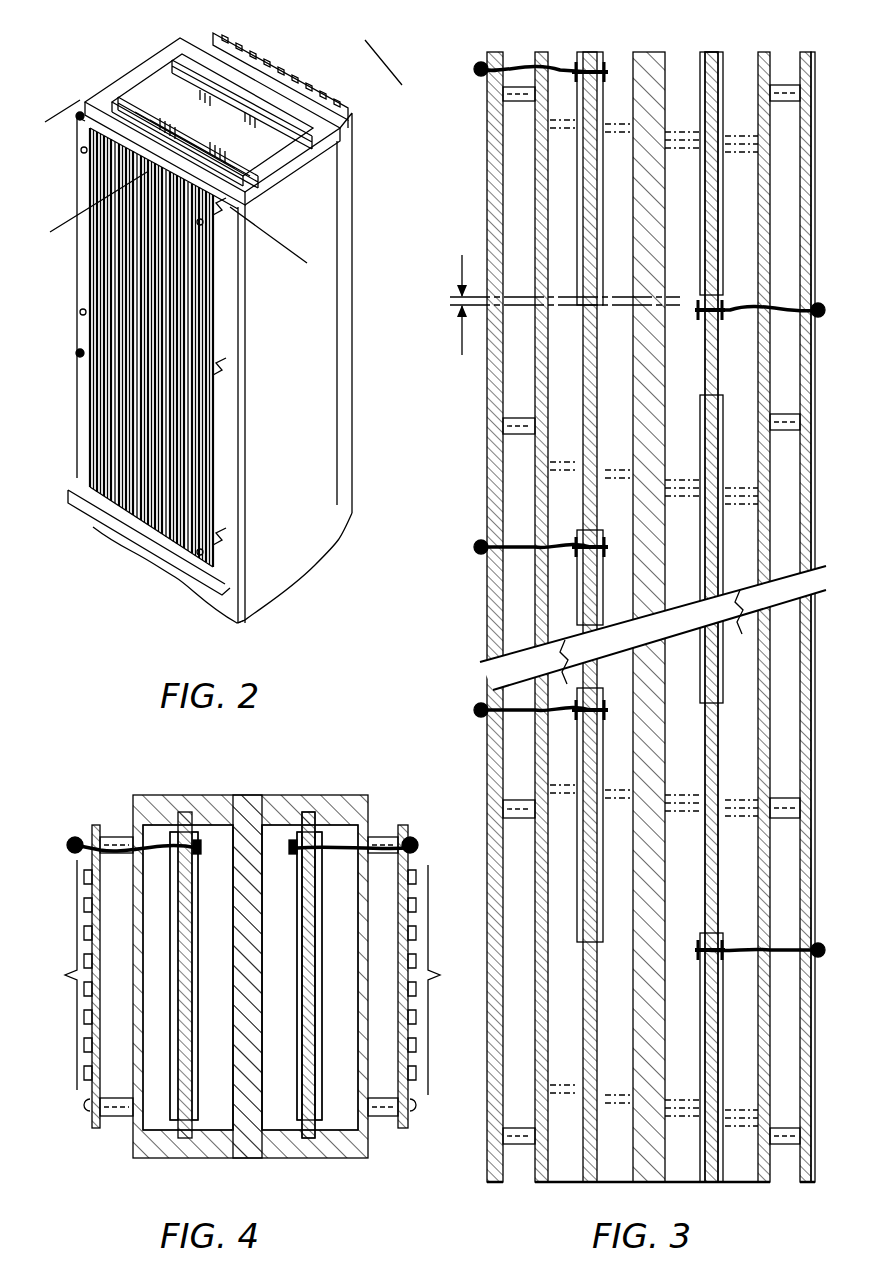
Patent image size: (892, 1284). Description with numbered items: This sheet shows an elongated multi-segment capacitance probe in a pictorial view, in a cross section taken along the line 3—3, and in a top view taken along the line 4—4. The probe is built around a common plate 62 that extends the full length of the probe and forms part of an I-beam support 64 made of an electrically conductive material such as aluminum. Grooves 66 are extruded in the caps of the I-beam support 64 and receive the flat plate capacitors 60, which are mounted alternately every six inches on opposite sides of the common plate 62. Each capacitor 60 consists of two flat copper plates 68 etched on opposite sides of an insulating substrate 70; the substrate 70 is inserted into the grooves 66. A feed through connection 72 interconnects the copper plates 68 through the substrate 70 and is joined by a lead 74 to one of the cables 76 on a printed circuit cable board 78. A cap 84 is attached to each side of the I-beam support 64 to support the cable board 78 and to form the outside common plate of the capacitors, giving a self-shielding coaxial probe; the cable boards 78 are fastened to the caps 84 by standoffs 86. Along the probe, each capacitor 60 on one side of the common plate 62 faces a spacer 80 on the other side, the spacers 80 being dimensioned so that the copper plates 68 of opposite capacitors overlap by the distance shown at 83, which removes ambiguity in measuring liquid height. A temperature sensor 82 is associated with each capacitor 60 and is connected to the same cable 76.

In FIG. 2, the section line 3— 3 is at (355, 56).
In FIG. 2, the section line 4— 4 is at (62, 114).
In FIG. 4, the flat plate capacitor 60 is at (160, 1098).
In FIG. 3, the flat plate capacitor 60 is at (568, 63).
In FIG. 2, the common plate 62 is at (292, 162).
In FIG. 4, the common plate 62 is at (258, 830).
In FIG. 3, the common plate 62 is at (660, 72).
In FIG. 2, the I-beam support 64 is at (145, 78).
In FIG. 2, the grooves 66 is at (130, 92).
In FIG. 4, the grooves 66 is at (185, 812).
In FIG. 4, the flat copper plates 68 is at (175, 960).
In FIG. 3, the flat copper plates 68 is at (583, 172).
In FIG. 4, the insulating substrate 70 is at (190, 1140).
In FIG. 3, the insulating substrate 70 is at (590, 65).
In FIG. 4, the feed through connection 72 is at (200, 843).
In FIG. 3, the feed through connection 72 is at (605, 68).
In FIG. 4, the lead 74 is at (124, 857).
In FIG. 3, the lead 74 is at (522, 62).
In FIG. 2, the cables 76 is at (290, 55).
In FIG. 4, the cables 76 is at (70, 970).
In FIG. 3, the cables 76 is at (484, 157).
In FIG. 2, the printed circuit cable board 78 is at (77, 288).
In FIG. 4, the spacer 80 is at (305, 1140).
In FIG. 3, the spacer 80 is at (712, 66).
In FIG. 2, the temperature sensor 82 is at (77, 119).
In FIG. 4, the temperature sensor 82 is at (74, 838).
In FIG. 3, the temperature sensor 82 is at (474, 66).
In FIG. 3, the overlap 83 is at (560, 292).
In FIG. 2, the cap 84 is at (353, 482).
In FIG. 4, the cap 84 is at (137, 800).
In FIG. 3, the cap 84 is at (538, 1170).
In FIG. 2, the standoffs 86 is at (224, 216).
In FIG. 4, the standoffs 86 is at (115, 840).
In FIG. 3, the standoffs 86 is at (520, 95).